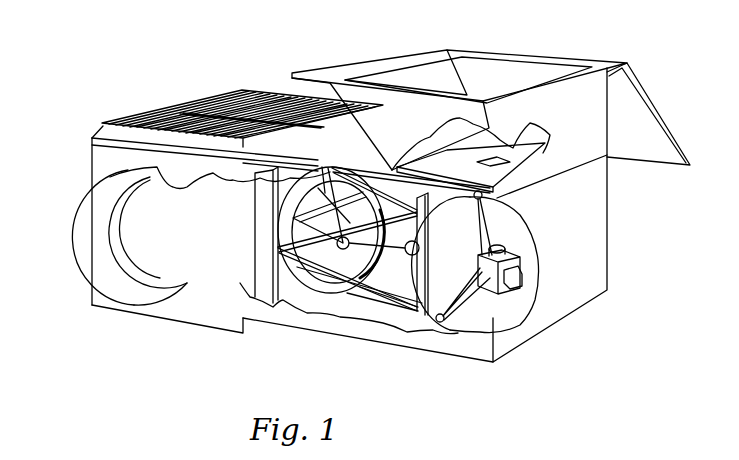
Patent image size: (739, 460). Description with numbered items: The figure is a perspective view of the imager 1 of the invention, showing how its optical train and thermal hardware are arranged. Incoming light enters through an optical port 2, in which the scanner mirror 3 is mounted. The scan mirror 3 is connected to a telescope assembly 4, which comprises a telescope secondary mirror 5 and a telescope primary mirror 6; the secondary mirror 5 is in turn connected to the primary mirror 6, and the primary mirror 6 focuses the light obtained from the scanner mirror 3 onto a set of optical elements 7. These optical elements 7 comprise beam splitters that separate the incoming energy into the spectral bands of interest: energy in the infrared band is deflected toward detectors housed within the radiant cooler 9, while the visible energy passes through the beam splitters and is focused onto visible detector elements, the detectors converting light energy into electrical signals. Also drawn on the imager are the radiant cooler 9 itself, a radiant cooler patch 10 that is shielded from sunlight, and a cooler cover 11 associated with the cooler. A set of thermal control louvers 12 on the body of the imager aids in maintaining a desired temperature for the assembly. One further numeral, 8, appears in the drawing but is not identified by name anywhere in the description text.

The imager 1 is at (597, 235).
The optical port 2 is at (95, 277).
The scanner mirror 3 is at (143, 217).
The telescope assembly 4 is at (318, 290).
The telescope secondary mirror 5 is at (340, 250).
The telescope primary mirror 6 is at (467, 317).
The optical elements 7 is at (497, 272).
The rotary cage 8 is at (323, 190).
The radiant cooler 9 is at (410, 75).
The radiant cooler patch 10 is at (503, 150).
The cooler cover 11 is at (650, 98).
The thermal control louvers 12 is at (213, 102).